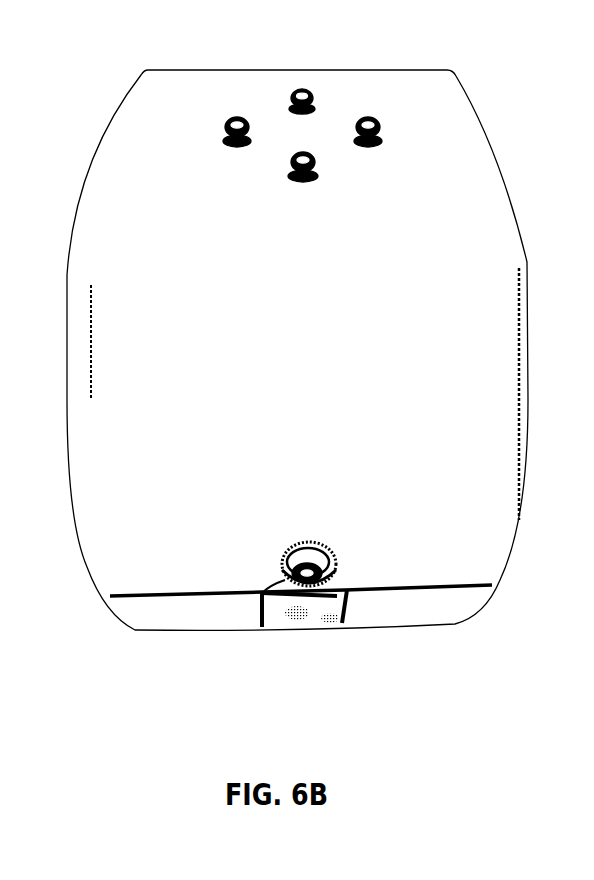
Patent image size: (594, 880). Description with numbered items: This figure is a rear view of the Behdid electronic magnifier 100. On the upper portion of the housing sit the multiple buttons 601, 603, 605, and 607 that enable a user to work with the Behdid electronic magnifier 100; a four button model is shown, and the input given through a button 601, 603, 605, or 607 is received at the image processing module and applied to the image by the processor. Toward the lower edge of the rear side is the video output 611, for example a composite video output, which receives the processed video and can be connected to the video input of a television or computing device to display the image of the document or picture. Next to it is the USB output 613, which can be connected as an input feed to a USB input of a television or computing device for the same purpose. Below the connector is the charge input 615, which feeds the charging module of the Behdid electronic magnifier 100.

The Behdid electronic magnifier 100 is at (115, 188).
The button 601 is at (305, 183).
The button 603 is at (378, 146).
The button 605 is at (250, 148).
The button 607 is at (307, 90).
The video output 611 is at (360, 562).
The USB output 613 is at (267, 590).
The charge input 615 is at (295, 618).